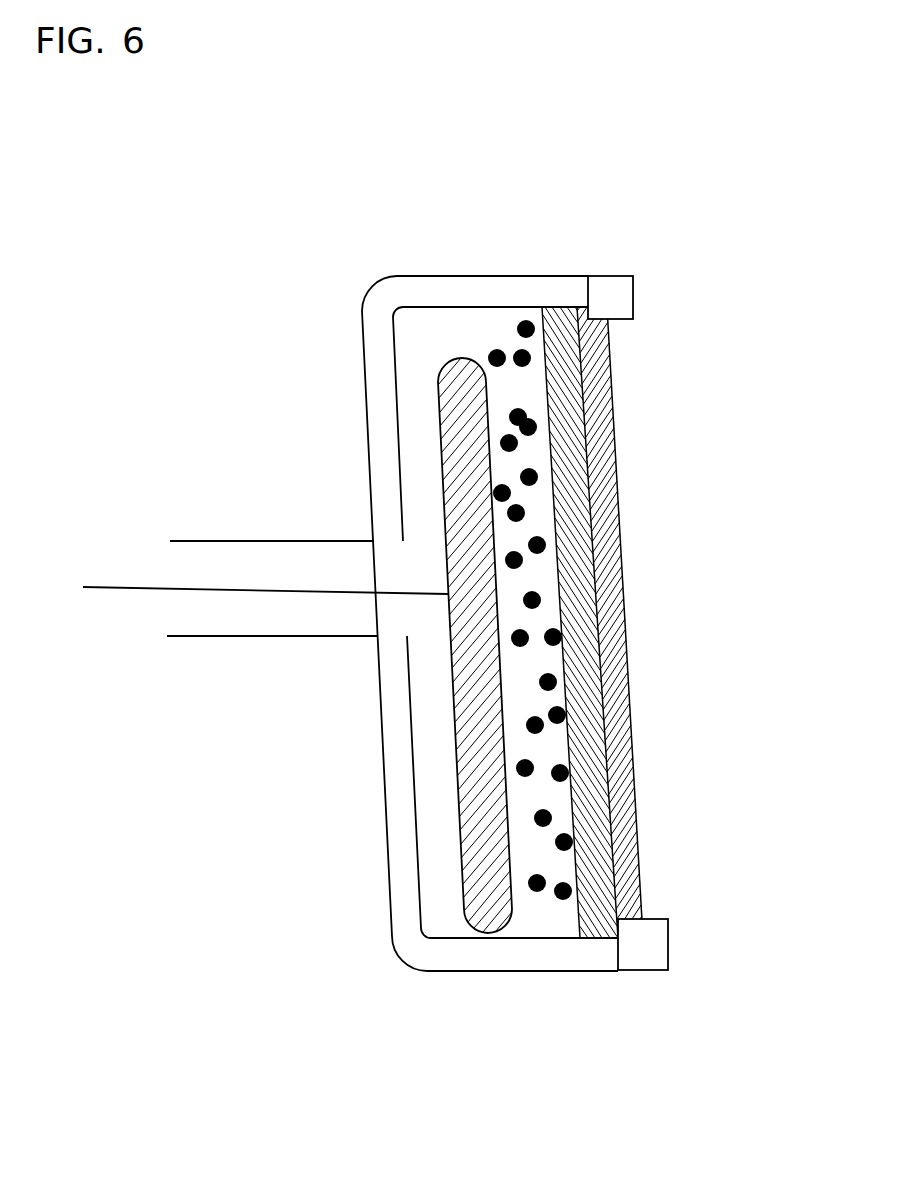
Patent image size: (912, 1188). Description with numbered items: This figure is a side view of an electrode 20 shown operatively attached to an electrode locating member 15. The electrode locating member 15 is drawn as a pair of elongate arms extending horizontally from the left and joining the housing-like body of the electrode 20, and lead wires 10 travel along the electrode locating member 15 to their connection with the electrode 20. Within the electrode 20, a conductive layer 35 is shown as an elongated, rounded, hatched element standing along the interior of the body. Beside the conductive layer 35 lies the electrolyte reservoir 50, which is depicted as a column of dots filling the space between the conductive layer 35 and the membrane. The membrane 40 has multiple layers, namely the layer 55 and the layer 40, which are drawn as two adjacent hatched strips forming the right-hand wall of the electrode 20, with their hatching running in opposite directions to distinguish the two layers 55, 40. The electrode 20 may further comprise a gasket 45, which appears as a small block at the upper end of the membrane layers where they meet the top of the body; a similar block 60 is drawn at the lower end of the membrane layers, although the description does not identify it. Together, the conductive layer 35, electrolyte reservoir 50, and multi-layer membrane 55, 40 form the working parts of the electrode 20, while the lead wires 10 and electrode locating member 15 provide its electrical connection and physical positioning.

The lead wires 10 is at (157, 590).
The electrode locating member 15 is at (240, 541).
The electrode 20 is at (333, 316).
The conductive layer 35 is at (485, 870).
The membrane 40 is at (610, 723).
The gasket 45 is at (615, 290).
The electrolyte reservoir 50 is at (542, 867).
The layer 55 is at (602, 883).
The lower seal 60 is at (618, 919).